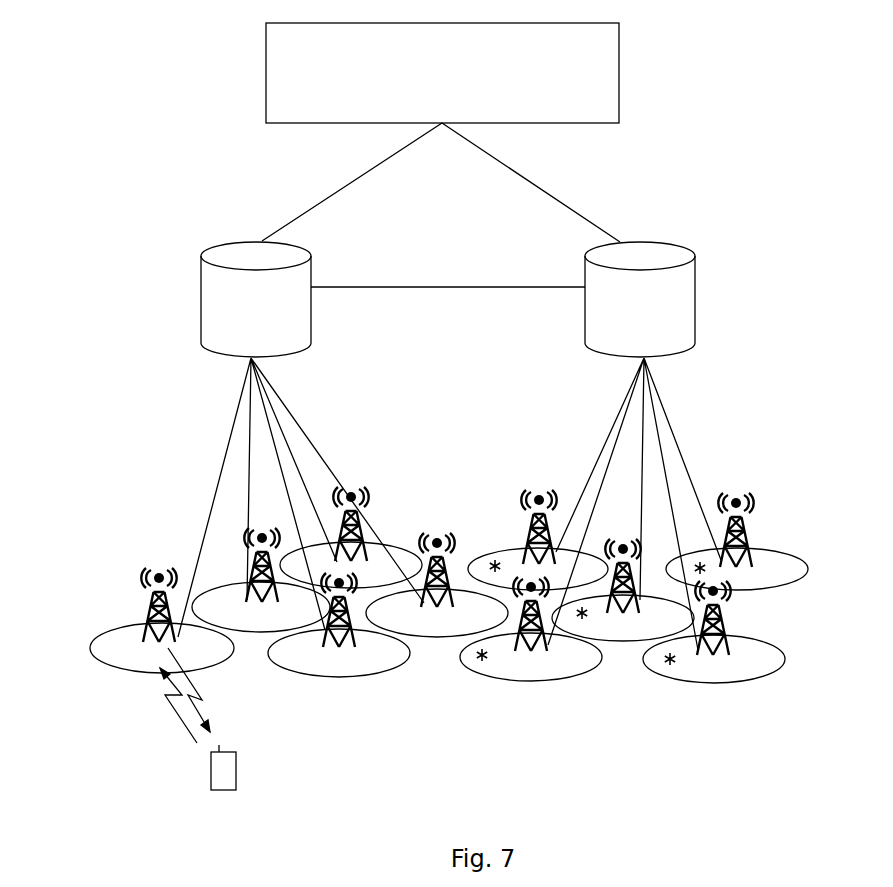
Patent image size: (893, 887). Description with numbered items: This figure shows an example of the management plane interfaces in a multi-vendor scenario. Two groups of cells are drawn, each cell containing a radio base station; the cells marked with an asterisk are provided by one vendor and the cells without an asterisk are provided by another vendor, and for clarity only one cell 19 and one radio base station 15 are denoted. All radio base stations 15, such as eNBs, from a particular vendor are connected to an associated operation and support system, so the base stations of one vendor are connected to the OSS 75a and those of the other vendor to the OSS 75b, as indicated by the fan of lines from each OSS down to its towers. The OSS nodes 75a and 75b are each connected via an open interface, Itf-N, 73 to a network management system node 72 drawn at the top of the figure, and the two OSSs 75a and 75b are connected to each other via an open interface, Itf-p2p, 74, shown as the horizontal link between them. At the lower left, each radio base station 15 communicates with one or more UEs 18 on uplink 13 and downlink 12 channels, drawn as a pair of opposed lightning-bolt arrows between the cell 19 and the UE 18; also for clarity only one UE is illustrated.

The network management system node 72 is at (421, 83).
The open interface Itf-N 73 is at (312, 205).
The open interface Itf-p2p 74 is at (427, 287).
The operation and support system 75a is at (236, 319).
The operation and support system 75b is at (620, 319).
The radio base station 15 is at (148, 598).
The cell 19 is at (93, 640).
The downlink channel 12 is at (203, 702).
The uplink channel 13 is at (182, 727).
The UE 18 is at (236, 772).